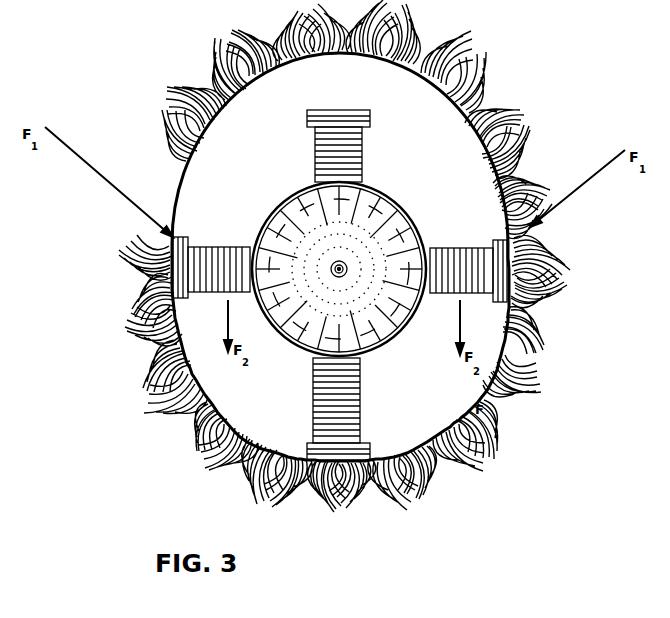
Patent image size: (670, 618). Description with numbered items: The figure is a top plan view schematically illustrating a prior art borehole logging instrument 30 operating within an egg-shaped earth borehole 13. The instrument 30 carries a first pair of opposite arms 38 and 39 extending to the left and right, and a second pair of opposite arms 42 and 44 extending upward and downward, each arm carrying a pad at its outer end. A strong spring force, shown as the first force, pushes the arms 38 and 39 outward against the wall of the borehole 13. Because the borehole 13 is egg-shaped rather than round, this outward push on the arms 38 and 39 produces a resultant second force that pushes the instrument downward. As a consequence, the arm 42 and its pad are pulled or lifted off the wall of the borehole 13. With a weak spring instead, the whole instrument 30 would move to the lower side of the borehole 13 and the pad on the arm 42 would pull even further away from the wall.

The egg-shaped earth borehole 13 is at (373, 83).
The borehole logging instrument 30 is at (413, 216).
The arm 38 is at (445, 248).
The arm 39 is at (240, 247).
The arm 42 is at (362, 174).
The arm 44 is at (362, 412).